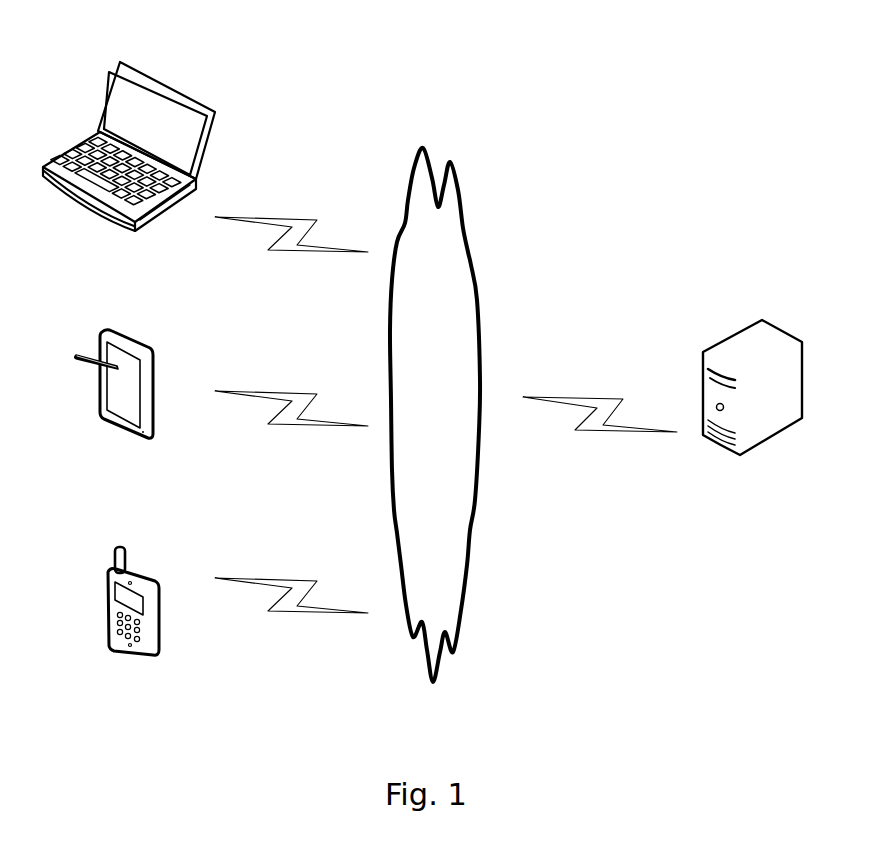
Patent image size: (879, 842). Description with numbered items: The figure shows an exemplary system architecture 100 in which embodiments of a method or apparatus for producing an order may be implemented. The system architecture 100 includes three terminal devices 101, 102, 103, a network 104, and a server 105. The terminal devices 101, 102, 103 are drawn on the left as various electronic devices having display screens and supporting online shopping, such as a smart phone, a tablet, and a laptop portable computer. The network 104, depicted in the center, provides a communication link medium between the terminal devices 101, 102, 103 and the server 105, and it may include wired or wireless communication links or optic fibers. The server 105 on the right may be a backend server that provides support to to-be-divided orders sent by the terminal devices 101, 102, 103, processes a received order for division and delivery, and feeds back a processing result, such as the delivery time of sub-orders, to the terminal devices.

The system architecture 100 is at (661, 48).
The terminal device 101 is at (133, 625).
The terminal device 102 is at (114, 407).
The terminal device 103 is at (129, 165).
The network 104 is at (435, 415).
The server 105 is at (752, 413).